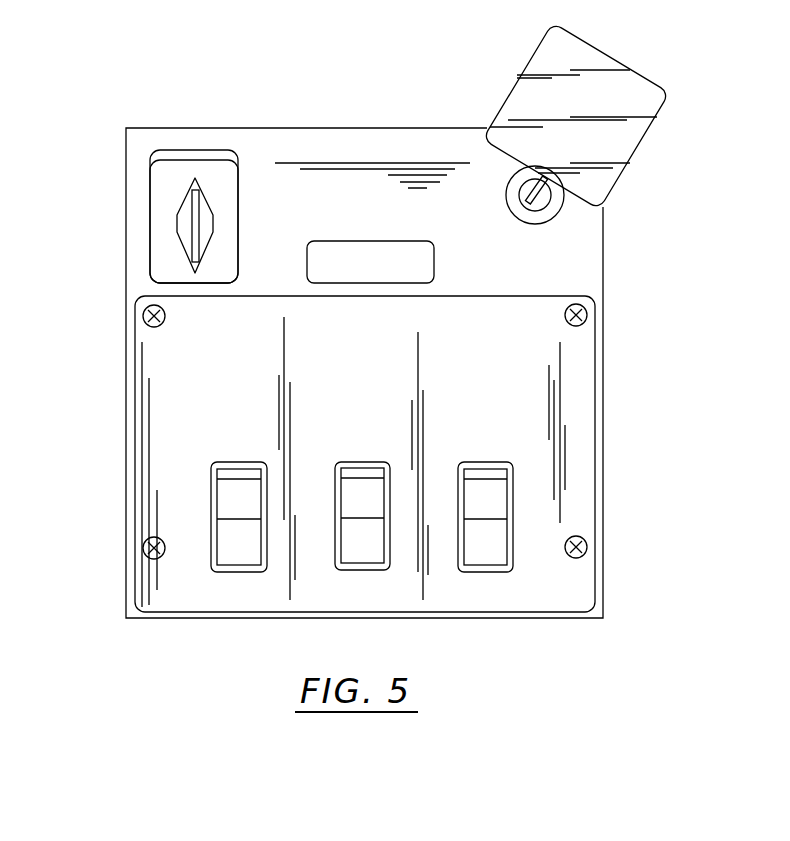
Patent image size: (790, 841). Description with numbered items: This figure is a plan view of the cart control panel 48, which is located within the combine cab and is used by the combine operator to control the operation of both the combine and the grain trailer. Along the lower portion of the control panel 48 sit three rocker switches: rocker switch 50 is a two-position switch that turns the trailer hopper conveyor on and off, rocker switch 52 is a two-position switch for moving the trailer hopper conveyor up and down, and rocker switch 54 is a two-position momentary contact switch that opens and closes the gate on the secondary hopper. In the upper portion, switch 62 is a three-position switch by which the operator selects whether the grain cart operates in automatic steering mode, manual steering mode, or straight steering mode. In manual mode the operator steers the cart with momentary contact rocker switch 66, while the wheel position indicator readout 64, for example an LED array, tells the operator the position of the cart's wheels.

The control panel 48 is at (80, 123).
The rocker switch 50 is at (233, 462).
The rocker switch 52 is at (363, 462).
The rocker switch 54 is at (495, 462).
The switch 62 is at (210, 158).
The wheel position indicator readout 64 is at (624, 60).
The rocker switch 66 is at (367, 241).